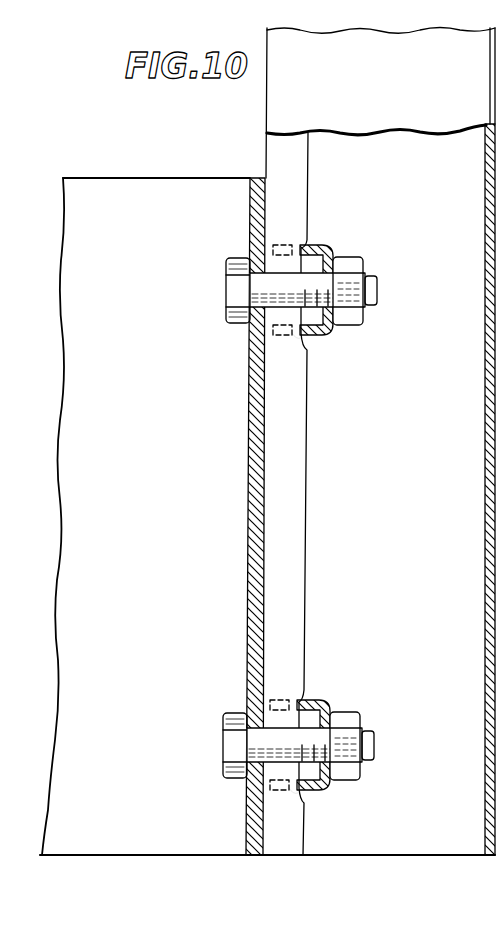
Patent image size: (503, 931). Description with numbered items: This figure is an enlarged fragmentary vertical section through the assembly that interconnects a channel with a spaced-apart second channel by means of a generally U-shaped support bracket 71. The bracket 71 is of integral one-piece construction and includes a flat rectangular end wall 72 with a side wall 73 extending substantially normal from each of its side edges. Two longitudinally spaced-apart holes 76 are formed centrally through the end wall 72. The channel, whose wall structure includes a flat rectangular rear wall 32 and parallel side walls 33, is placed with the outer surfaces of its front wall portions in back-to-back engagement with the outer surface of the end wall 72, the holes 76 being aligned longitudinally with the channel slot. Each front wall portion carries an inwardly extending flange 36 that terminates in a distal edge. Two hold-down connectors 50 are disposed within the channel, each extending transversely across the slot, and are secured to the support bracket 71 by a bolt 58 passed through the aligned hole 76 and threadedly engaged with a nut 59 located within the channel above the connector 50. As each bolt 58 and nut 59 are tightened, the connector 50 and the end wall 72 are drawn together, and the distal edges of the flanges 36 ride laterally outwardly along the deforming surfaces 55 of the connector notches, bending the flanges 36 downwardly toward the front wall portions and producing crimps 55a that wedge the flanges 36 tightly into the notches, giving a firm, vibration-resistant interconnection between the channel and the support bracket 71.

The rear wall 32 is at (490, 170).
The side wall 33 is at (400, 113).
The flange 36 is at (298, 585).
The hold-down connector 50 is at (325, 244).
The deforming surface 55 is at (293, 337).
The crimp 55a is at (298, 792).
The bolt 58 is at (226, 296).
The nut 59 is at (356, 261).
The support bracket 71 is at (151, 172).
The end wall 72 is at (250, 586).
The side wall 73 is at (70, 712).
The hole 76 is at (257, 316).